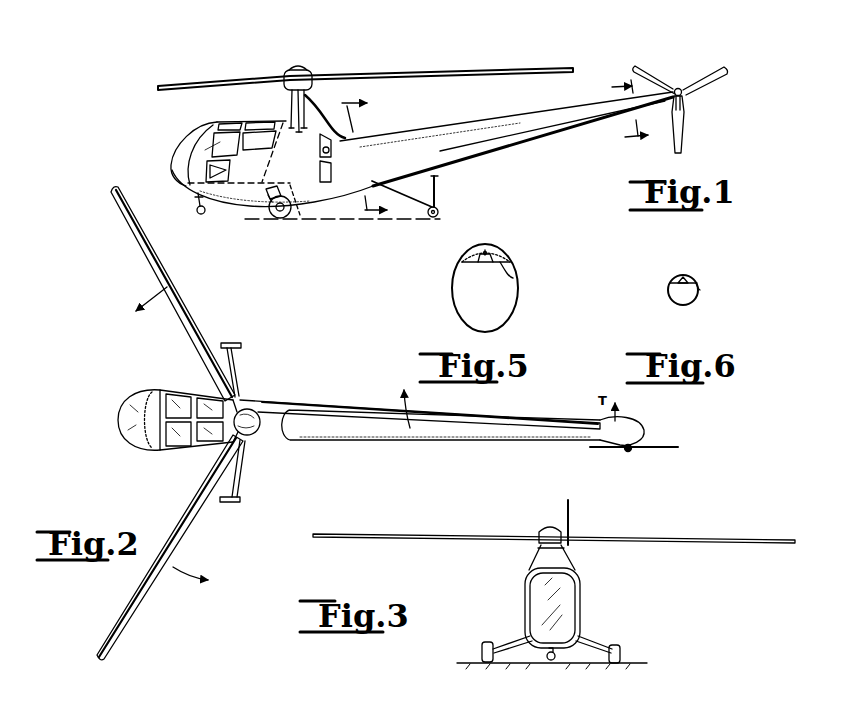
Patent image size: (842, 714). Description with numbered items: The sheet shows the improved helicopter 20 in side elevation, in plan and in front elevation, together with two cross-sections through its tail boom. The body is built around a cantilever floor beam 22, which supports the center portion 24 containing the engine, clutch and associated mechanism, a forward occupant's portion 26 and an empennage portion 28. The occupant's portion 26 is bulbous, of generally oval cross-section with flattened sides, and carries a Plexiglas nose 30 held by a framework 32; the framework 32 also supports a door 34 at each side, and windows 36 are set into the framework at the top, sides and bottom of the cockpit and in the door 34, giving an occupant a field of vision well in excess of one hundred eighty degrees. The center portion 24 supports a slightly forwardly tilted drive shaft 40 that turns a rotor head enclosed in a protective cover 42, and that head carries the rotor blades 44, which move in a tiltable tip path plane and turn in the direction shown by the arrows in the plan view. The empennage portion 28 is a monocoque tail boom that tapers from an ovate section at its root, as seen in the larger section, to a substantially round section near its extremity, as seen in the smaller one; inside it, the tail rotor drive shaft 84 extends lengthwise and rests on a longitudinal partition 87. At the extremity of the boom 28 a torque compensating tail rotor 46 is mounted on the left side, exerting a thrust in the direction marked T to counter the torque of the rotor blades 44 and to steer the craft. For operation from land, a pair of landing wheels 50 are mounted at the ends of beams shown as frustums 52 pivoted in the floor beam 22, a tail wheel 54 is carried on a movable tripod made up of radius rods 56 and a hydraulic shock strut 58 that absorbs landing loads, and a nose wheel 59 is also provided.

In FIG. 1, the helicopter 20 is at (496, 193).
In FIG. 1, the cantilever floor beam 22 is at (336, 222).
In FIG. 1, the center portion 24 is at (306, 104).
In FIG. 2, the center portion 24 is at (212, 388).
In FIG. 3, the center portion 24 is at (571, 566).
In FIG. 1, the forward occupant's portion 26 is at (164, 128).
In FIG. 2, the forward occupant's portion 26 is at (111, 427).
In FIG. 3, the forward occupant's portion 26 is at (593, 586).
In FIG. 1, the empennage portion 28 is at (527, 97).
In FIG. 2, the empennage portion 28 is at (545, 422).
In FIG. 5, the empennage portion 28 is at (453, 291).
In FIG. 6, the empennage portion 28 is at (669, 298).
In FIG. 1, the Plexiglas nose 30 is at (181, 156).
In FIG. 2, the Plexiglas nose 30 is at (121, 415).
In FIG. 3, the Plexiglas nose 30 is at (575, 613).
In FIG. 1, the framework 32 is at (228, 131).
In FIG. 2, the framework 32 is at (190, 390).
In FIG. 1, the door 34 is at (206, 178).
In FIG. 1, the windows 36 is at (265, 134).
In FIG. 2, the windows 36 is at (186, 447).
In FIG. 1, the drive shaft 40 is at (312, 77).
In FIG. 1, the protective cover 42 is at (291, 72).
In FIG. 2, the protective cover 42 is at (252, 434).
In FIG. 3, the protective cover 42 is at (554, 529).
In FIG. 1, the rotor blades 44 is at (217, 85).
In FIG. 2, the rotor blades 44 is at (196, 305).
In FIG. 3, the rotor blades 44 is at (466, 535).
In FIG. 1, the tail rotor 46 is at (688, 73).
In FIG. 2, the tail rotor 46 is at (658, 443).
In FIG. 3, the tail rotor 46 is at (581, 512).
In FIG. 2, the landing wheels 50 is at (245, 356).
In FIG. 3, the landing wheels 50 is at (483, 649).
In FIG. 1, the frustums 52 is at (270, 211).
In FIG. 2, the frustums 52 is at (238, 381).
In FIG. 3, the frustums 52 is at (515, 644).
In FIG. 1, the tail wheel 54 is at (441, 215).
In FIG. 1, the radius rods 56 is at (406, 163).
In FIG. 1, the hydraulic shock strut 58 is at (441, 182).
In FIG. 1, the nose wheel 59 is at (222, 212).
In FIG. 3, the nose wheel 59 is at (554, 658).
In FIG. 5, the tail rotor drive shaft 84 is at (489, 256).
In FIG. 6, the tail rotor drive shaft 84 is at (688, 279).
In FIG. 5, the longitudinal partition 87 is at (512, 278).
In FIG. 6, the longitudinal partition 87 is at (699, 290).